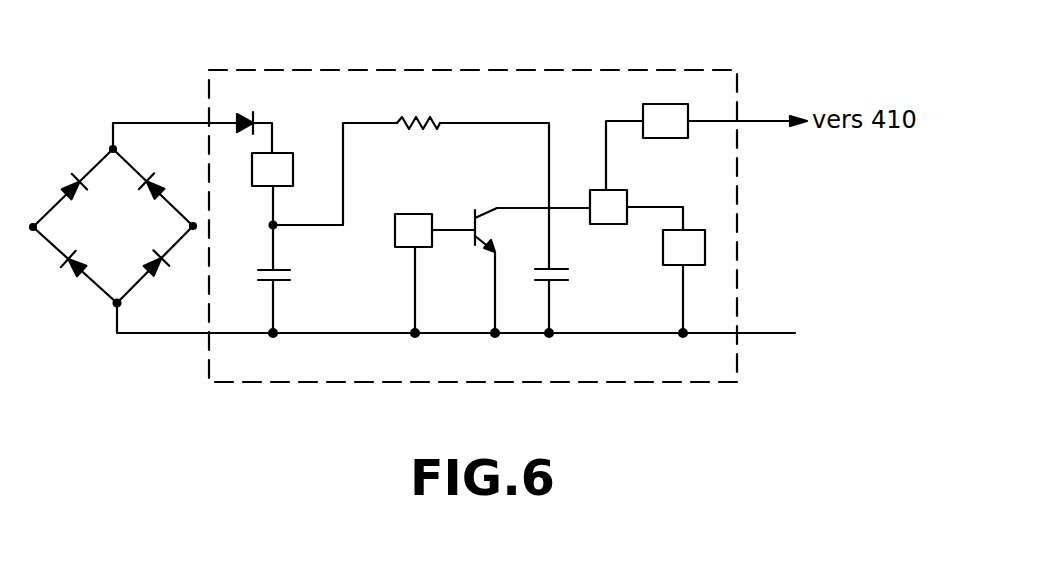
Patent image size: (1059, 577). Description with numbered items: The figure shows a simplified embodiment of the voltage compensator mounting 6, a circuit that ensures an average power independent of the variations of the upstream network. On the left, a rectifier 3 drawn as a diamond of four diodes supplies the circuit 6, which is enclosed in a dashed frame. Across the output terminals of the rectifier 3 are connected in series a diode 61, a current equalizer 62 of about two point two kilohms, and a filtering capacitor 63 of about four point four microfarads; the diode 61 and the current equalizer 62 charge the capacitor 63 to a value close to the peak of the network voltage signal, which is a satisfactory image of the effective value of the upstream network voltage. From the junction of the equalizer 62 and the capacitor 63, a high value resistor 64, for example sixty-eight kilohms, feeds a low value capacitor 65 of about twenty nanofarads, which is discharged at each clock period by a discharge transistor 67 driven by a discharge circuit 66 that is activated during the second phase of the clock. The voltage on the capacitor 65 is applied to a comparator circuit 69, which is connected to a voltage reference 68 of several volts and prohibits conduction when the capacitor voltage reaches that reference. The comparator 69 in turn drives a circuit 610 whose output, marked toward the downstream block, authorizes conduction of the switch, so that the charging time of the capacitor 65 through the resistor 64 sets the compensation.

The rectifier 3 is at (91, 138).
The voltage compensator mounting 6 is at (346, 70).
The diode 61 is at (240, 119).
The current equalizer 62 is at (287, 171).
The filtering capacitor 63 is at (284, 272).
The high value resistor 64 is at (432, 118).
The low value capacitor 65 is at (568, 274).
The discharge circuit 66 is at (416, 230).
The discharge transistor 67 is at (479, 230).
The voltage reference 68 is at (688, 235).
The comparator circuit 69 is at (600, 192).
The conduction authorizing circuit 610 is at (645, 106).